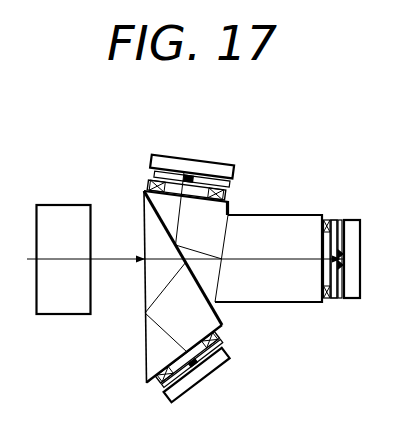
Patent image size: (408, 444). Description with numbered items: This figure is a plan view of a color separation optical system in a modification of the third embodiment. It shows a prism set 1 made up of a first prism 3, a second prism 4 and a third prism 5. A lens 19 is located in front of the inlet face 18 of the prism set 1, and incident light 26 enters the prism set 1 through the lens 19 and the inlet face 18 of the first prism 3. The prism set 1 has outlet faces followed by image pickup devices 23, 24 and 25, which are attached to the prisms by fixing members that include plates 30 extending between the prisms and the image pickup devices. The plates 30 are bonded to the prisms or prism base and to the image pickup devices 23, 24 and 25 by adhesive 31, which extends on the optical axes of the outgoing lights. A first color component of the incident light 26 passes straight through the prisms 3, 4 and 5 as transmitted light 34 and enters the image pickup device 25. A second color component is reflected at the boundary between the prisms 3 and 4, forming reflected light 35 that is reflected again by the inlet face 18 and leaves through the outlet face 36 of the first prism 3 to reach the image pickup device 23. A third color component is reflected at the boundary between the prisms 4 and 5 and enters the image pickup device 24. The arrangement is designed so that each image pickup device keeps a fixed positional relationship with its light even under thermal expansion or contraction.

The prism set 1 is at (146, 380).
The first prism 3 is at (144, 216).
The second prism 4 is at (229, 209).
The third prism 5 is at (293, 222).
The inlet face 18 is at (145, 360).
The lens 19 is at (64, 314).
The image pickup device 23 is at (222, 364).
The image pickup device 24 is at (220, 163).
The image pickup device 25 is at (361, 238).
The incident light 26 is at (112, 260).
The plate 30 is at (228, 190).
The adhesive 31 is at (343, 249).
The transmitted light 34 is at (298, 260).
The reflected light 35 is at (158, 330).
The outlet face 36 is at (225, 326).